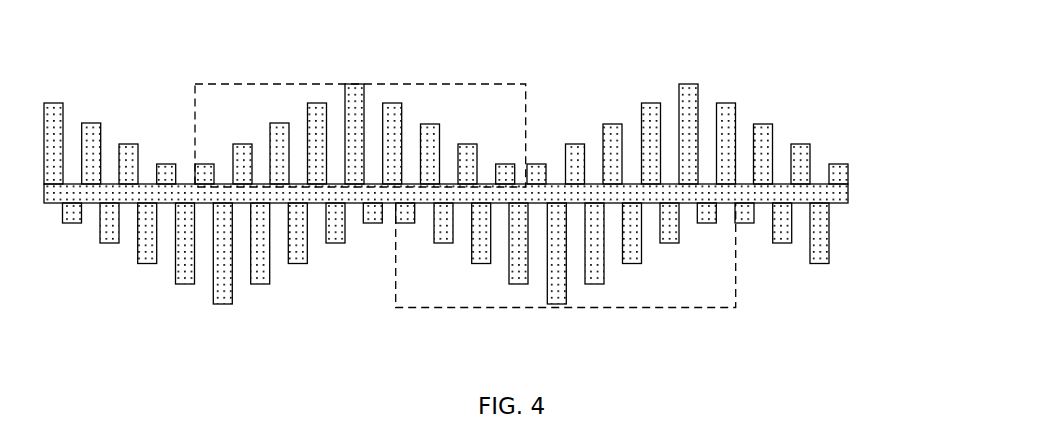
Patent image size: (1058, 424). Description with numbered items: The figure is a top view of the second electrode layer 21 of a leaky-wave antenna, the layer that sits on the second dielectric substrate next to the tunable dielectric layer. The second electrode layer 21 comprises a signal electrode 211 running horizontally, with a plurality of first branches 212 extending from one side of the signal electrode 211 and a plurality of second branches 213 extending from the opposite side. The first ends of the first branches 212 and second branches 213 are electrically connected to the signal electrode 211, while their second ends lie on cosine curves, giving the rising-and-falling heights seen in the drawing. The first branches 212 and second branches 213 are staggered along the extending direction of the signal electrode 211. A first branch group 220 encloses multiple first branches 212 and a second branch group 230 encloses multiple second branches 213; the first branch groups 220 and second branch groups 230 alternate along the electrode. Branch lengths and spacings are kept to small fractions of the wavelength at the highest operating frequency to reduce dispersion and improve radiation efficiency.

The second electrode layer 21 is at (503, 194).
The signal electrode 211 is at (820, 193).
The first branch 212 is at (838, 170).
The second branch 213 is at (820, 218).
The first branch group 220 is at (448, 84).
The second branch group 230 is at (565, 308).